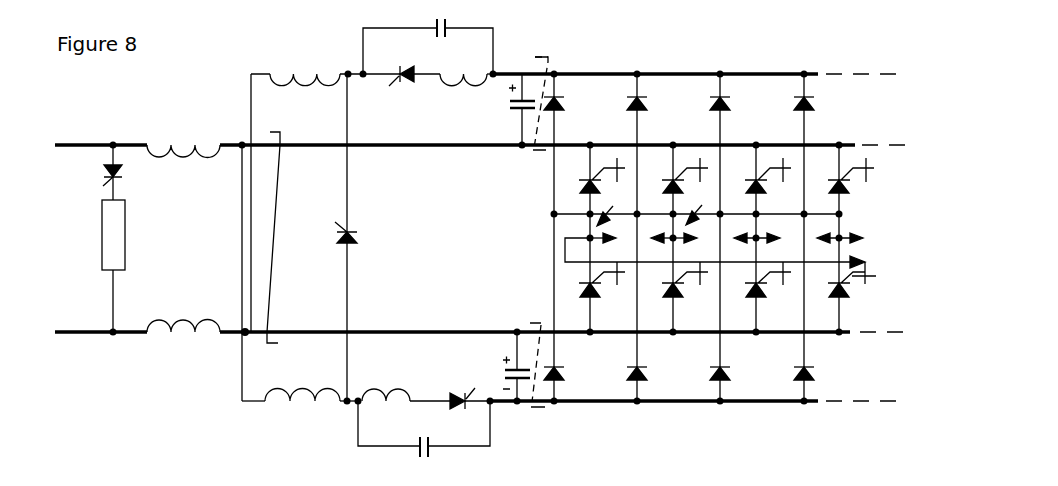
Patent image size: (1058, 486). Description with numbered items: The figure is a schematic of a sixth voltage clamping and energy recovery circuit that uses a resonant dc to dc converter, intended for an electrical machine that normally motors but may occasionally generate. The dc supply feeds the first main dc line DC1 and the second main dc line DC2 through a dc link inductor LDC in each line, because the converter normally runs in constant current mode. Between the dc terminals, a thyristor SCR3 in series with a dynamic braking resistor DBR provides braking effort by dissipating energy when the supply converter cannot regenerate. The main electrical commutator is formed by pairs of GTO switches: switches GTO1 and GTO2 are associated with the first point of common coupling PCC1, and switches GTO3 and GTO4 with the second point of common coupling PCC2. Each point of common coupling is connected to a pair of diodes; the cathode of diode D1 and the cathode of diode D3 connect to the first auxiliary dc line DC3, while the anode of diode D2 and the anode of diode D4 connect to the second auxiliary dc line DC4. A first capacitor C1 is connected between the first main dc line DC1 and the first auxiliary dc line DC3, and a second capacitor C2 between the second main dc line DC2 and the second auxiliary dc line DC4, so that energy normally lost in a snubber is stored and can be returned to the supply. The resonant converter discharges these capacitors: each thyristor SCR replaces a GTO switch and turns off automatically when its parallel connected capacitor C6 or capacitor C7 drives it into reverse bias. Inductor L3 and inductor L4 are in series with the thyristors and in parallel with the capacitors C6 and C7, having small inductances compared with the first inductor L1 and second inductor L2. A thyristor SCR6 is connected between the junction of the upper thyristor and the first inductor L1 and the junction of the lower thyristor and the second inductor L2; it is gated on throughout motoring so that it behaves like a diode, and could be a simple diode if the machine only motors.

The first inductor L1 is at (305, 68).
The second inductor L2 is at (300, 407).
The inductor L3 is at (466, 67).
The inductor L4 is at (386, 384).
The first capacitor C1 is at (510, 109).
The second capacitor C2 is at (505, 366).
The capacitor C6 is at (428, 46).
The capacitor C7 is at (424, 430).
The thyristor SCR is at (426, 252).
The thyristor SCR3 is at (139, 172).
The thyristor SCR6 is at (370, 229).
The dynamic braking resistor DBR is at (90, 266).
The dc link inductor LDC is at (183, 239).
The first main dc line DC1 is at (480, 229).
The second main dc line DC2 is at (480, 346).
The first auxiliary dc line DC3 is at (699, 65).
The second auxiliary dc line DC4 is at (697, 414).
The diode D1 is at (565, 116).
The diode D2 is at (564, 384).
The diode D3 is at (648, 116).
The diode D4 is at (647, 384).
The switch GTO1 is at (591, 176).
The switch GTO2 is at (591, 291).
The switch GTO3 is at (674, 176).
The switch GTO4 is at (674, 291).
The first point of common coupling PCC1 is at (610, 209).
The second point of common coupling PCC2 is at (682, 209).